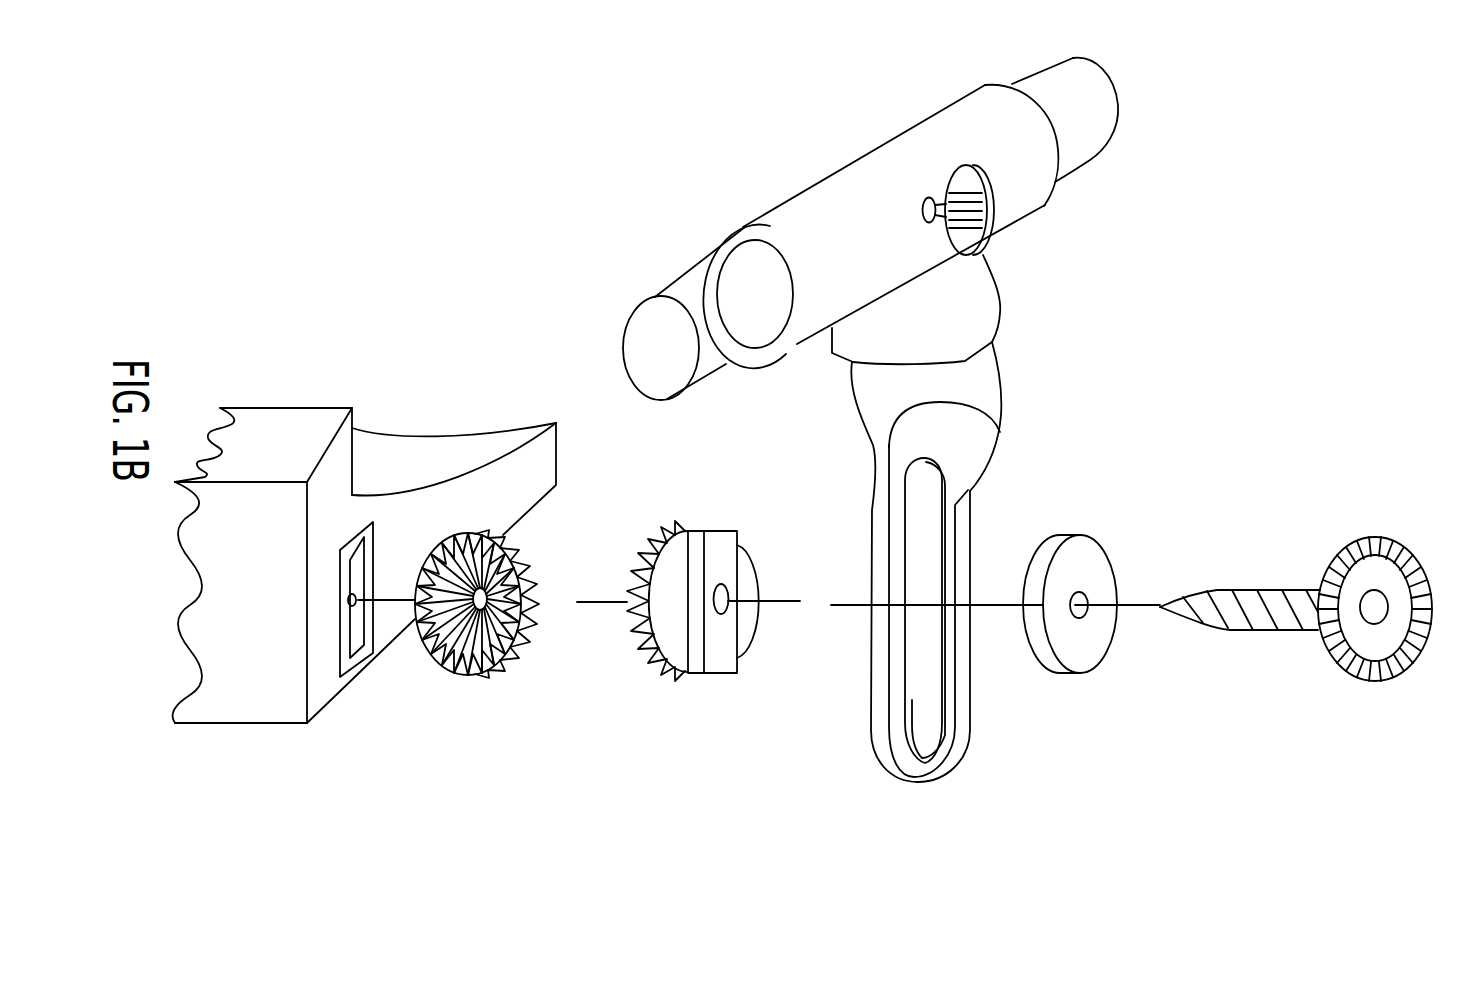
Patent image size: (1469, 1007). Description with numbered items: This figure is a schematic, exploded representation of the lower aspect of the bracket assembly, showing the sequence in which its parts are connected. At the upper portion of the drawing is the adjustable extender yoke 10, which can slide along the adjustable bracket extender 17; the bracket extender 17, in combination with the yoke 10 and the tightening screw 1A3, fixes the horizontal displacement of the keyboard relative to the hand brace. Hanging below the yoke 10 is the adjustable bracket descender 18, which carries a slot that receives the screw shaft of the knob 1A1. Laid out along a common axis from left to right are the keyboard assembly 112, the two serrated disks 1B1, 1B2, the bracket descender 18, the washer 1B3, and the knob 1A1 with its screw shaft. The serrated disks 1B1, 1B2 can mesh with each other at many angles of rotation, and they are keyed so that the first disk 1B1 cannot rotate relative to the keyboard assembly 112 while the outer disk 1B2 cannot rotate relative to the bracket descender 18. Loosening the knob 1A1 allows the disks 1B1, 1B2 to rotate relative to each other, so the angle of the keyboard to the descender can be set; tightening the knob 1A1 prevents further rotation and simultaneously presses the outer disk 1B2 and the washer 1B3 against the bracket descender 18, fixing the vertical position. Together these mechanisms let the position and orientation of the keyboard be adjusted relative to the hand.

The adjustable extender yoke 10 is at (1005, 317).
The adjustable bracket extender 17 is at (1120, 93).
The tightening screw 1A3 is at (1003, 213).
The adjustable bracket descender 18 is at (920, 790).
The keyboard assembly 112 is at (248, 728).
The serrated disk 1B1 is at (487, 690).
The serrated disk 1B2 is at (703, 690).
The washer 1B3 is at (1071, 690).
The knob 1A1 is at (1385, 700).